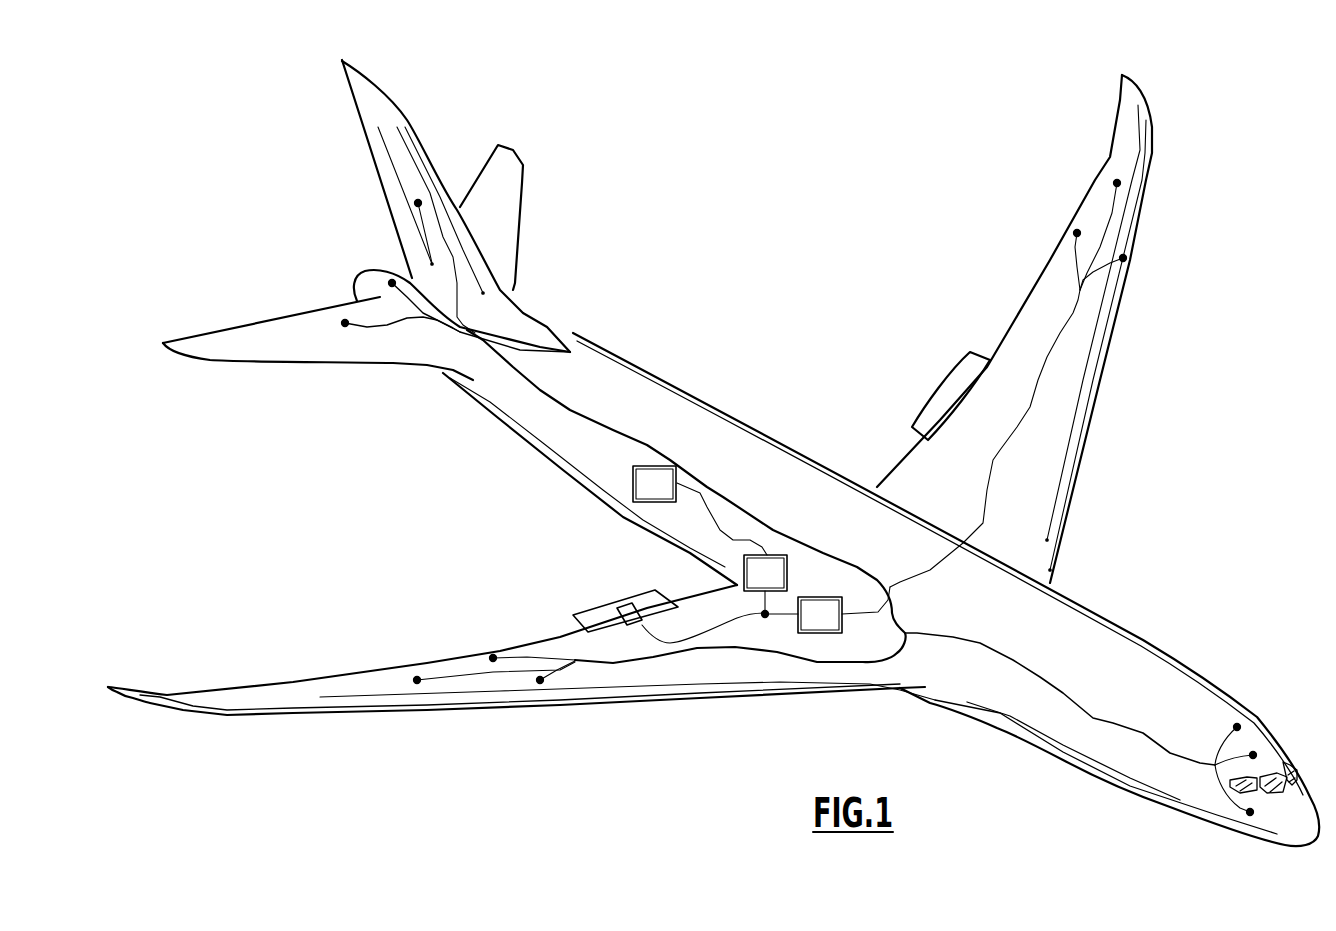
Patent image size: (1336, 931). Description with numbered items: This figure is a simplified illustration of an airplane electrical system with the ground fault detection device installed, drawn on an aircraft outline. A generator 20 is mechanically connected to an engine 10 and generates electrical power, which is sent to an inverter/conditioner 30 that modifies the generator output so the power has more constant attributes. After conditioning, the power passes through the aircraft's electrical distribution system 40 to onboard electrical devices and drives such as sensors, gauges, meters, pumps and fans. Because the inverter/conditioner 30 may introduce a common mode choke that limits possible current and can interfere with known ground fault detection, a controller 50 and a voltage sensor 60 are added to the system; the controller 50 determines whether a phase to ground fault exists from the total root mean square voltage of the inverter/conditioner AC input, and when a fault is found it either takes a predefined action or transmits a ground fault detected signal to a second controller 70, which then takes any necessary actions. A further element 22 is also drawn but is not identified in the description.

The engine 10 is at (665, 645).
The generator 20 is at (628, 605).
The sensor 22 is at (637, 626).
The inverter/conditioner 30 is at (835, 629).
The electrical distribution system 40 is at (1093, 718).
The controller 50 is at (781, 587).
The voltage sensor 60 is at (765, 618).
The second controller 70 is at (670, 498).